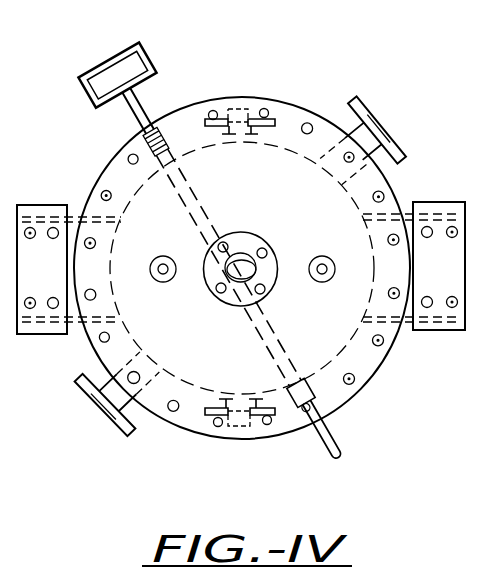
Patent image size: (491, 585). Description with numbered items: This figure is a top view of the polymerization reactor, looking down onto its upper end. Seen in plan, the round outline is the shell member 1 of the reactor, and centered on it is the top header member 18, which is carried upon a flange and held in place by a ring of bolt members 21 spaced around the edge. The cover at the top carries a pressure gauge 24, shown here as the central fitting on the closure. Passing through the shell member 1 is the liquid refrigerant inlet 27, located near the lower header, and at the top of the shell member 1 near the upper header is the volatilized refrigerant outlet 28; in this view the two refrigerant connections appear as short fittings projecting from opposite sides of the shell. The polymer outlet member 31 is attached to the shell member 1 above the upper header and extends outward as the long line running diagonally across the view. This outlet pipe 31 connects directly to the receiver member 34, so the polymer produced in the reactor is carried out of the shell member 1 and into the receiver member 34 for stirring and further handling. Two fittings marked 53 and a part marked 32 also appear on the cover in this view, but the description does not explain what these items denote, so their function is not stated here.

The shell member 1 is at (352, 198).
The top header member 18 is at (178, 431).
The bolt members 21 is at (316, 410).
The pressure gauge 24 is at (255, 270).
The liquid refrigerant inlet 27 is at (394, 136).
The volatilized refrigerant outlet 28 is at (90, 400).
The polymer outlet member 31 is at (333, 438).
The handle 32 is at (140, 99).
The receiver member 34 is at (171, 148).
The bolts 53 is at (163, 264).